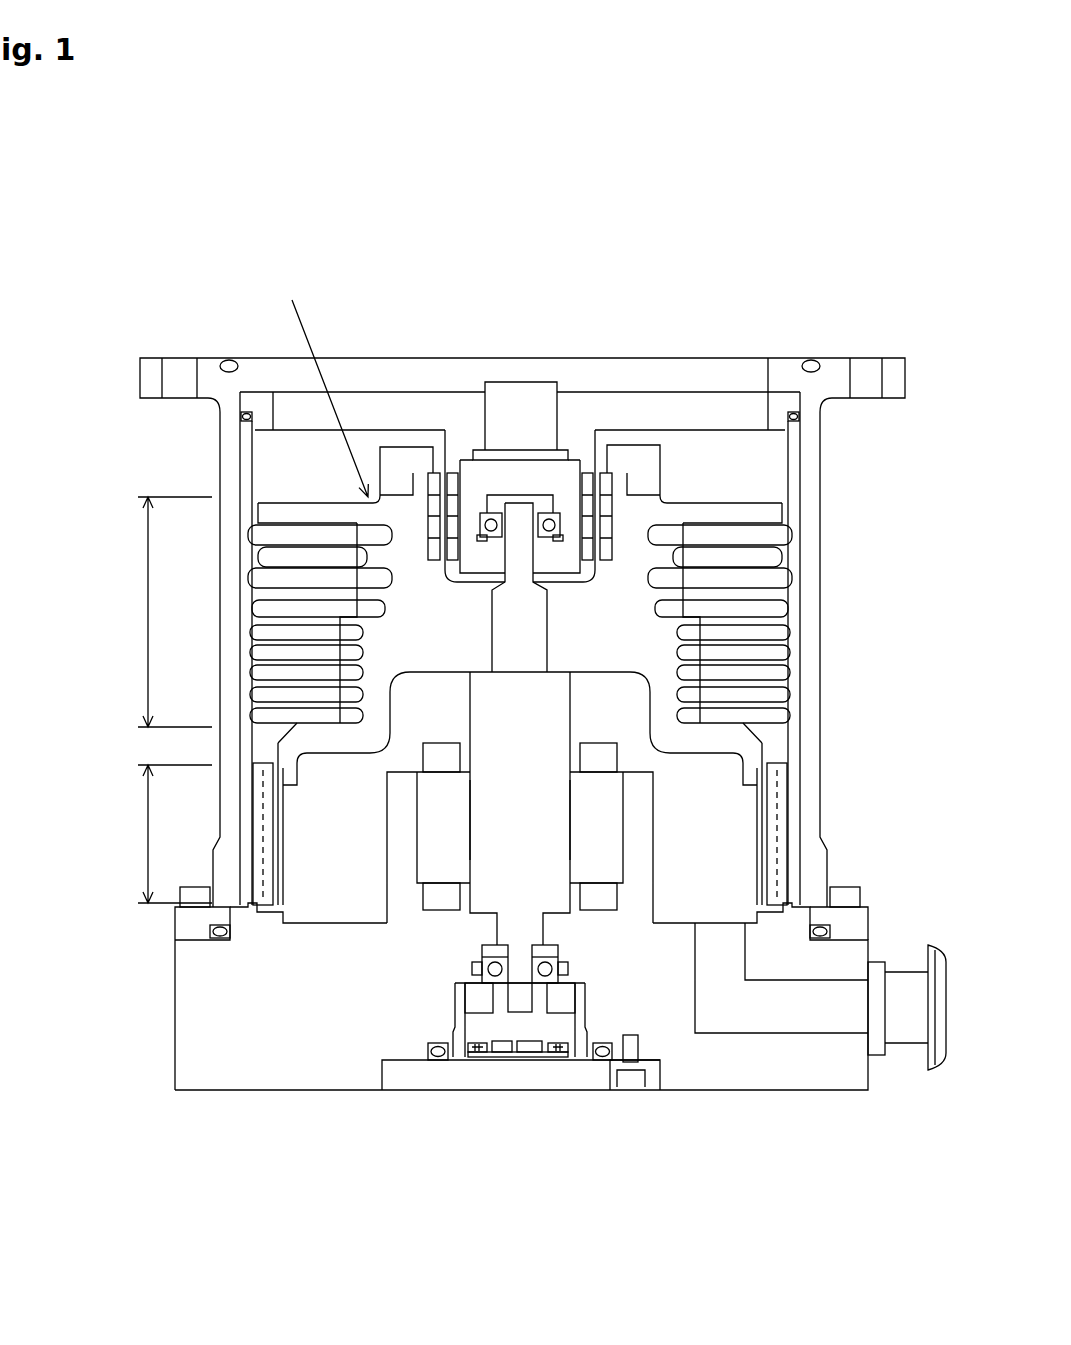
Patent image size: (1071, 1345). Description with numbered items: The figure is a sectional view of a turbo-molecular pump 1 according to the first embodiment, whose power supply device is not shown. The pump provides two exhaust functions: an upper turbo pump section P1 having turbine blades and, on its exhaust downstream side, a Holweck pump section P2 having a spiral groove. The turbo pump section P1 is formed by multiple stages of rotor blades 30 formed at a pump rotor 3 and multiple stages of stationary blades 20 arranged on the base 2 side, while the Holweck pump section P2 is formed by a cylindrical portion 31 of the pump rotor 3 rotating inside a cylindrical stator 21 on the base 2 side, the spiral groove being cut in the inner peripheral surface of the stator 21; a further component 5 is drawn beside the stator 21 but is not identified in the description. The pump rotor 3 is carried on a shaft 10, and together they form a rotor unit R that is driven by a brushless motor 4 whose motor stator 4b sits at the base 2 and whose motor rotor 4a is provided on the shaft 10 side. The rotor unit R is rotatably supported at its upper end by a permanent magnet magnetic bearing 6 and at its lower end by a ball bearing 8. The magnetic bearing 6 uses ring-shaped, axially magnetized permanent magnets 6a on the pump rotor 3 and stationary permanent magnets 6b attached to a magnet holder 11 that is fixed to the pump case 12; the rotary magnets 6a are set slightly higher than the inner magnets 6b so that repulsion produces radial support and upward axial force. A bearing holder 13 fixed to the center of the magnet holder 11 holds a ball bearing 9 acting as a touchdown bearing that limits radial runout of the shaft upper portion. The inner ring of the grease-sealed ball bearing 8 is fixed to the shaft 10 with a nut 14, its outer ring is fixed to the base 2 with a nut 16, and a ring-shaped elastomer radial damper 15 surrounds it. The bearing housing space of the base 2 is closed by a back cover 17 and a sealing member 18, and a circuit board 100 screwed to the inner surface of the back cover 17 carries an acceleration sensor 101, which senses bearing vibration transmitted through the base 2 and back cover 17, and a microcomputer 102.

The turbo-molecular pump 1 is at (540, 1326).
The base 2 is at (273, 1068).
The pump rotor 3 is at (622, 570).
The motor 4 is at (330, 790).
The motor rotor 4a is at (440, 818).
The motor stator 4b is at (497, 847).
The stator cylinder 5 is at (800, 594).
The permanent magnet magnetic bearing 6 is at (499, 405).
The permanent magnet 6a is at (434, 475).
The permanent magnet 6b is at (450, 475).
The ball bearing 8 is at (583, 1003).
The ball bearing 9 is at (494, 508).
The shaft 10 is at (556, 705).
The magnet holder 11 is at (617, 402).
The pump case 12 is at (818, 660).
The bearing holder 13 is at (542, 392).
The nut 14 is at (537, 998).
The radial damper 15 is at (472, 968).
The nut 16 is at (474, 1010).
The back cover 17 is at (398, 1075).
The sealing member 18 is at (440, 1057).
The stationary blades 20 is at (762, 537).
The stator 21 is at (776, 787).
The rotor blades 30 is at (758, 512).
The cylindrical portion 31 is at (760, 840).
The circuit board 100 is at (540, 1060).
The acceleration sensor 101 is at (529, 1058).
The microcomputer 102 is at (503, 1058).
The rotor unit R is at (323, 381).
The turbo pump section P1 is at (159, 612).
The Holweck pump section P2 is at (159, 834).